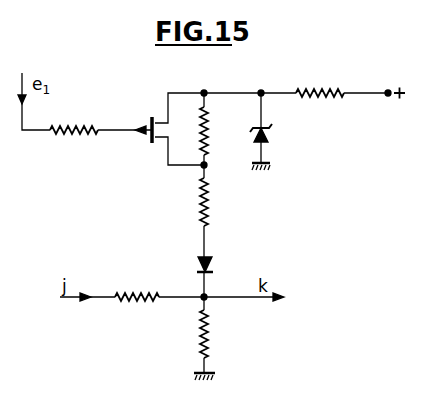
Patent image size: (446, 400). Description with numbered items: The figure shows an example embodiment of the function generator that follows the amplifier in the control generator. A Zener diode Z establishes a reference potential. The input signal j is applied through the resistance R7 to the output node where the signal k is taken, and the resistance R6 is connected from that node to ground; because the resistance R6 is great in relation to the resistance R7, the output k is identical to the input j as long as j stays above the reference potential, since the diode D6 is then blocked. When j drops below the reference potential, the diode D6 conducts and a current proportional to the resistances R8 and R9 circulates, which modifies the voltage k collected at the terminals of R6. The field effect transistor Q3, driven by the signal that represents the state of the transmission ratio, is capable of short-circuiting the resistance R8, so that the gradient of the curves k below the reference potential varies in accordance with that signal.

The field effect transistor Q3 is at (171, 129).
The resistance R8 is at (218, 130).
The Zener diode Z is at (267, 133).
The resistance R9 is at (218, 211).
The diode D6 is at (220, 273).
The resistance R7 is at (137, 286).
The resistance R6 is at (215, 338).